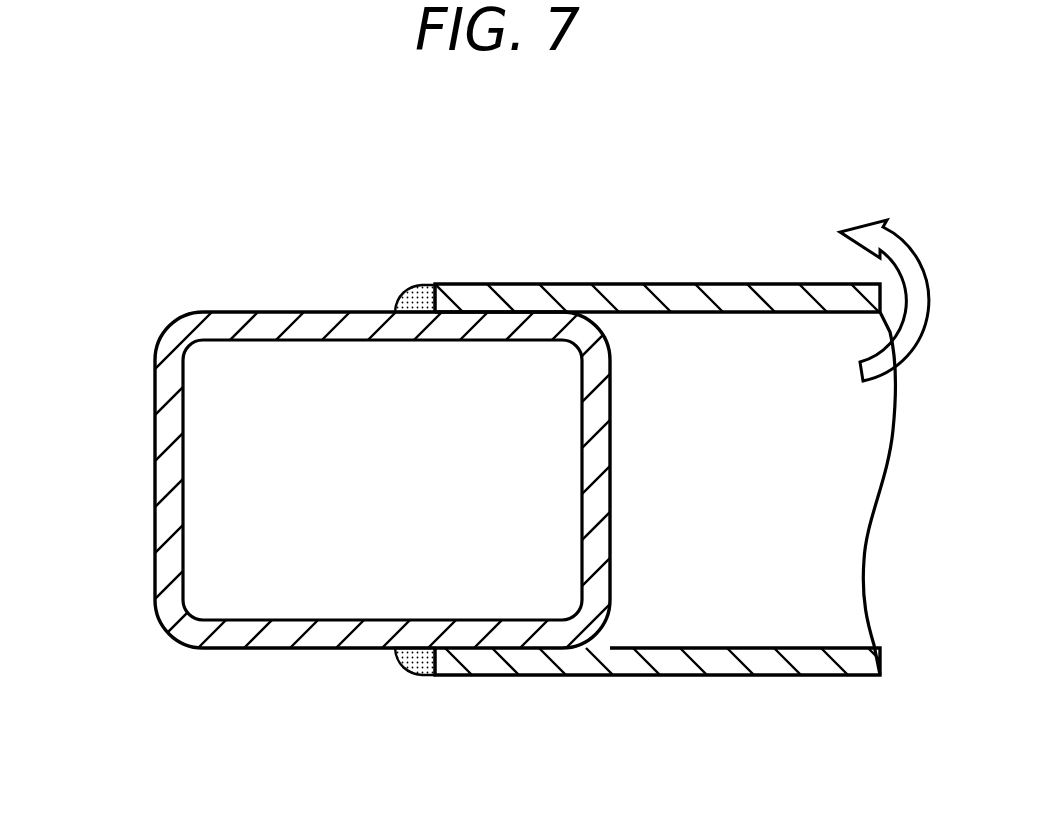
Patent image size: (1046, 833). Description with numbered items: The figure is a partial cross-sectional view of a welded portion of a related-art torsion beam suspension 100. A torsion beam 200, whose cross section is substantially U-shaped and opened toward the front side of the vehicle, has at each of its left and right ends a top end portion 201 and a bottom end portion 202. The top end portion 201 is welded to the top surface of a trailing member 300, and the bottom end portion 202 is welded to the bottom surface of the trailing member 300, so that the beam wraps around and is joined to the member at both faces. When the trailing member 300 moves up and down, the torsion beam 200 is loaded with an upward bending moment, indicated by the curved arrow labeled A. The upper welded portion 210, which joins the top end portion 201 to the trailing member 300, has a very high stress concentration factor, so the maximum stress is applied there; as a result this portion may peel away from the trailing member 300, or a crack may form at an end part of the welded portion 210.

The torsion beam suspension 100 is at (155, 245).
The torsion beam 200 is at (698, 485).
The top end portion 201 is at (463, 285).
The bottom end portion 202 is at (487, 667).
The upper welded portion 210 is at (404, 305).
The trailing member 300 is at (155, 475).